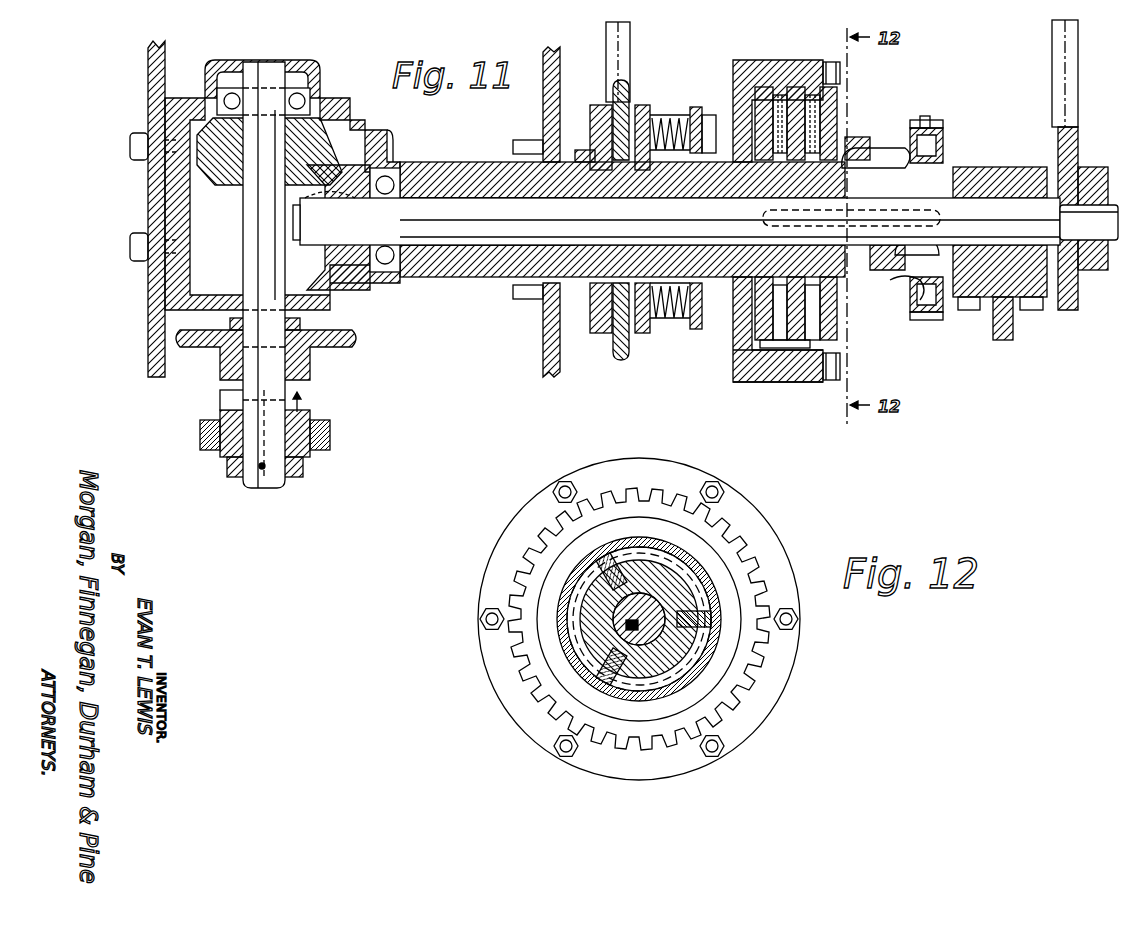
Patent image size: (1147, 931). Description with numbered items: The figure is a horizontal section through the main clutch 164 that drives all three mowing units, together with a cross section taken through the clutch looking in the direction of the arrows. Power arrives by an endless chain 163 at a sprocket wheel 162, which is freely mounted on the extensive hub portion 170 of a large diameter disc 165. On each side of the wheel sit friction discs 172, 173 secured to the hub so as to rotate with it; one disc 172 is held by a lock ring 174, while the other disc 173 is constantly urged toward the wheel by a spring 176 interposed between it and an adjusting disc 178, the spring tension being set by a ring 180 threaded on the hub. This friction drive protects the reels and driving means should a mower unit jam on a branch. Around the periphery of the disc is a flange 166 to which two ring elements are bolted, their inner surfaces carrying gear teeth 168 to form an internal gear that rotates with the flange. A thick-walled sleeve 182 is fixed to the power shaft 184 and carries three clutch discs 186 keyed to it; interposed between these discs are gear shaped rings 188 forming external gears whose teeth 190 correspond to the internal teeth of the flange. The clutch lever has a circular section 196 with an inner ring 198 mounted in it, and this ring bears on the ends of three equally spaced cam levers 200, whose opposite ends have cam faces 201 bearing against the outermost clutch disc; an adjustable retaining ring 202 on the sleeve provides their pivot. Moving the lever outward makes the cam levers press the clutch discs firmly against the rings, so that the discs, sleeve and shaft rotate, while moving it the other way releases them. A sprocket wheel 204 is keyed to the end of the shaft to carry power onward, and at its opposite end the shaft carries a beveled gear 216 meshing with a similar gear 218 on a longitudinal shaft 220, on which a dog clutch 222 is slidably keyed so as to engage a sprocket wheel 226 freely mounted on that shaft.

In FIG. 11, the sprocket wheel 162 is at (627, 95).
In FIG. 11, the endless chain 163 is at (632, 33).
In FIG. 11, the clutch 164 is at (738, 382).
In FIG. 11, the large diameter disc 165 is at (733, 90).
In FIG. 11, the flange 166 is at (752, 48).
In FIG. 12, the flange 166 is at (760, 520).
In FIG. 12, the gear teeth 168 is at (648, 493).
In FIG. 11, the hub portion 170 is at (585, 298).
In FIG. 11, the friction disc 172 is at (592, 115).
In FIG. 11, the friction disc 173 is at (645, 120).
In FIG. 11, the lock ring 174 is at (585, 158).
In FIG. 11, the spring 176 is at (676, 118).
In FIG. 11, the adjusting disc 178 is at (698, 110).
In FIG. 11, the ring 180 is at (710, 124).
In FIG. 11, the thick-walled sleeve 182 is at (905, 270).
In FIG. 12, the thick-walled sleeve 182 is at (583, 647).
In FIG. 11, the power shaft 184 is at (705, 219).
In FIG. 12, the power shaft 184 is at (605, 595).
In FIG. 11, the clutch discs 186 is at (760, 320).
In FIG. 11, the gear shaped rings 188 is at (800, 132).
In FIG. 12, the gear shaped rings 188 is at (558, 530).
In FIG. 12, the teeth 190 is at (748, 580).
In FIG. 11, the circular section 196 is at (945, 122).
In FIG. 11, the inner ring 198 is at (945, 140).
In FIG. 11, the cam levers 200 is at (885, 160).
In FIG. 12, the cam levers 200 is at (573, 568).
In FIG. 11, the cam faces 201 is at (855, 137).
In FIG. 11, the adjustable retaining ring 202 is at (872, 300).
In FIG. 12, the adjustable retaining ring 202 is at (603, 627).
In FIG. 11, the sprocket wheel 204 is at (1052, 68).
In FIG. 11, the beveled gear 216 is at (335, 183).
In FIG. 11, the beveled gear 218 is at (302, 148).
In FIG. 11, the longitudinal shaft 220 is at (258, 212).
In FIG. 11, the dog clutch 222 is at (306, 458).
In FIG. 11, the sprocket wheel 226 is at (312, 368).